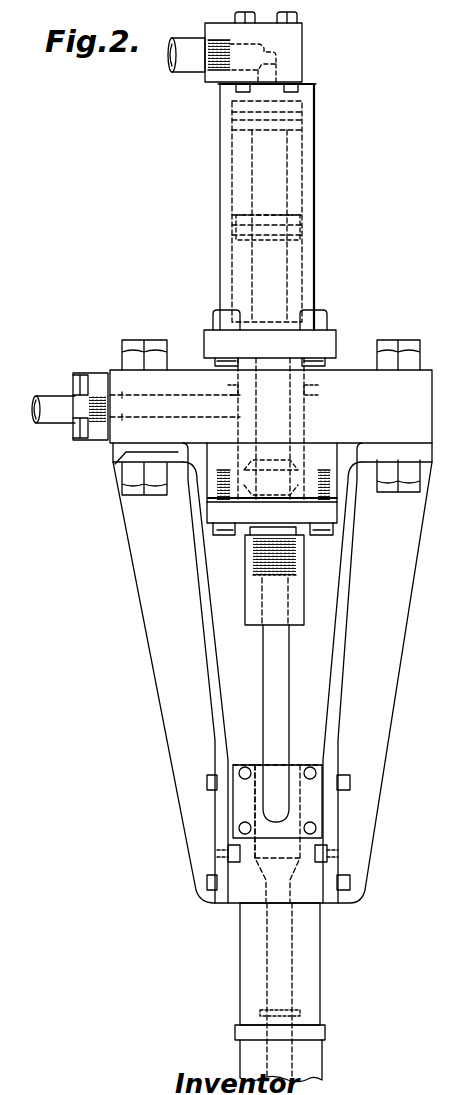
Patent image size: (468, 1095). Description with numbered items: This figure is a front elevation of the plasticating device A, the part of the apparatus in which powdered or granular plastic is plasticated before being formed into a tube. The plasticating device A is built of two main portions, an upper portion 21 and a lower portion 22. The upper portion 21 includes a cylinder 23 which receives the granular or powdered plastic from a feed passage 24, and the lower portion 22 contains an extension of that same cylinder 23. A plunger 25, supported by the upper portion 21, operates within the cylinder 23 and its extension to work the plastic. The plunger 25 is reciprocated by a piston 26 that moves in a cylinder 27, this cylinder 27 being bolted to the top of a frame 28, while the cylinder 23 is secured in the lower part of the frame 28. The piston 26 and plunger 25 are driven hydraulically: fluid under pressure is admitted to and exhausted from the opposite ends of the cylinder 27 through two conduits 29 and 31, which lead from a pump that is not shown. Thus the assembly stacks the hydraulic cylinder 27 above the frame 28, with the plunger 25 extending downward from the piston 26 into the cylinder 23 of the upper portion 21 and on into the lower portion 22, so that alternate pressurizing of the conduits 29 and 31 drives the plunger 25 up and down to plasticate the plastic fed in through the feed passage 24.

The upper portion 21 is at (378, 843).
The lower portion 22 is at (348, 1020).
The cylinder 23 is at (280, 975).
The feed passage 24 is at (278, 792).
The plunger 25 is at (280, 677).
The piston 26 is at (300, 219).
The cylinder 27 is at (228, 178).
The frame 28 is at (118, 456).
The conduit 29 is at (170, 69).
The conduit 31 is at (50, 400).
The plasticating device A is at (182, 882).